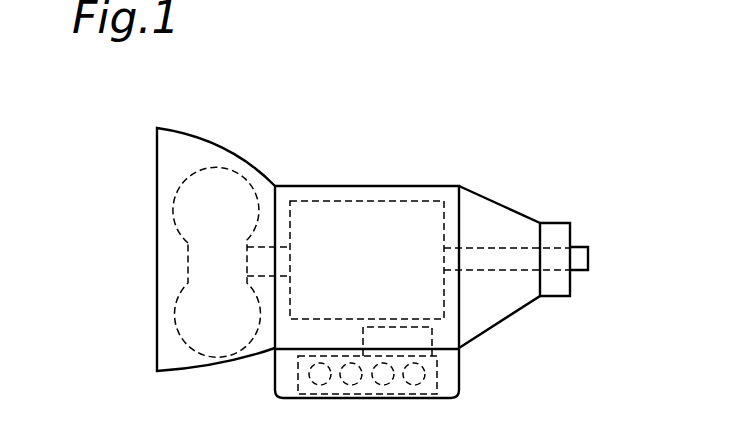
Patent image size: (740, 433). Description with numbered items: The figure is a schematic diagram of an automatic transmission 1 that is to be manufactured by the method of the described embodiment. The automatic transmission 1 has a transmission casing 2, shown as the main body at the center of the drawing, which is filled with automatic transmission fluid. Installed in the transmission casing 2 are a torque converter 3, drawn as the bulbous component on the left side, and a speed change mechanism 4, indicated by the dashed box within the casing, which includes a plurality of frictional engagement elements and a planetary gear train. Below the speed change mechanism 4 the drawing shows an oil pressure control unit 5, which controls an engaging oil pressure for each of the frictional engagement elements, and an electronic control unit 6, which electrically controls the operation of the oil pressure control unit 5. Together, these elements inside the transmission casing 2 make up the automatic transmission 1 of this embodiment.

The automatic transmission 1 is at (492, 150).
The transmission casing 2 is at (341, 186).
The torque converter 3 is at (243, 165).
The speed change mechanism 4 is at (393, 200).
The oil pressure control unit 5 is at (438, 371).
The electronic control unit 6 is at (433, 334).